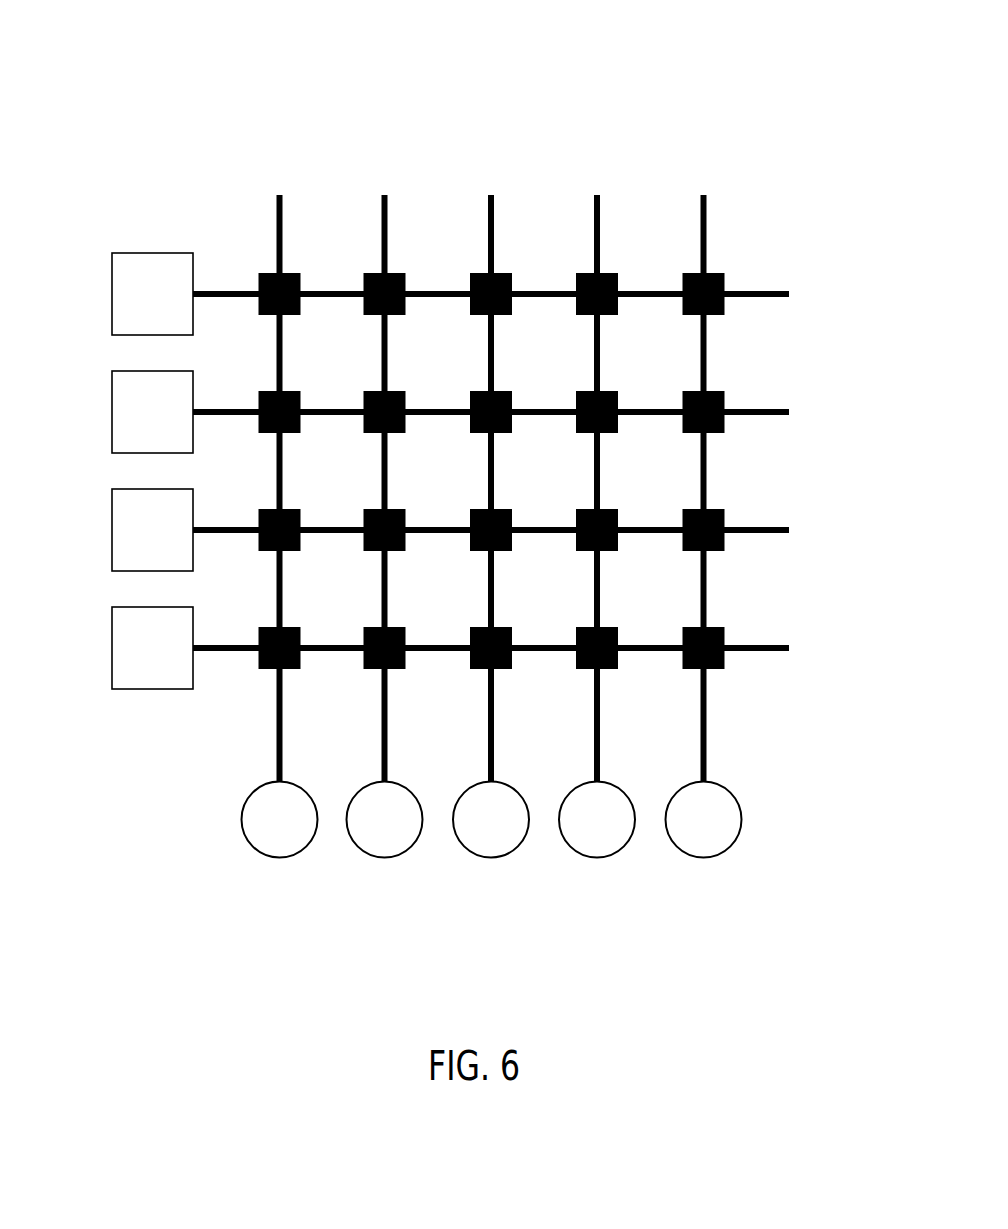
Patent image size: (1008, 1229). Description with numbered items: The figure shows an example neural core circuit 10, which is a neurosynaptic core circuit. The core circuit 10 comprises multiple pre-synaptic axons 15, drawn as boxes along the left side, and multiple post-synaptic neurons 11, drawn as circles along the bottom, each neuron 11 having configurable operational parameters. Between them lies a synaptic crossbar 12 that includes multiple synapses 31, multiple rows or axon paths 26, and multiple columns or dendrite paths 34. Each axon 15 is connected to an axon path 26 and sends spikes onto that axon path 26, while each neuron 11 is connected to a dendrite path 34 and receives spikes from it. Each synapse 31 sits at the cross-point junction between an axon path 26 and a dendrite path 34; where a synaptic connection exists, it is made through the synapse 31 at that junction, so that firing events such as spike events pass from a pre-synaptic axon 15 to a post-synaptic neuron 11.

The neural core circuit 10 is at (458, 34).
The post-synaptic neuron 11 is at (742, 820).
The synaptic crossbar 12 is at (792, 146).
The pre-synaptic axon 15 is at (110, 294).
The axon path 26 is at (757, 411).
The synapse 31 is at (717, 270).
The dendrite path 34 is at (388, 231).